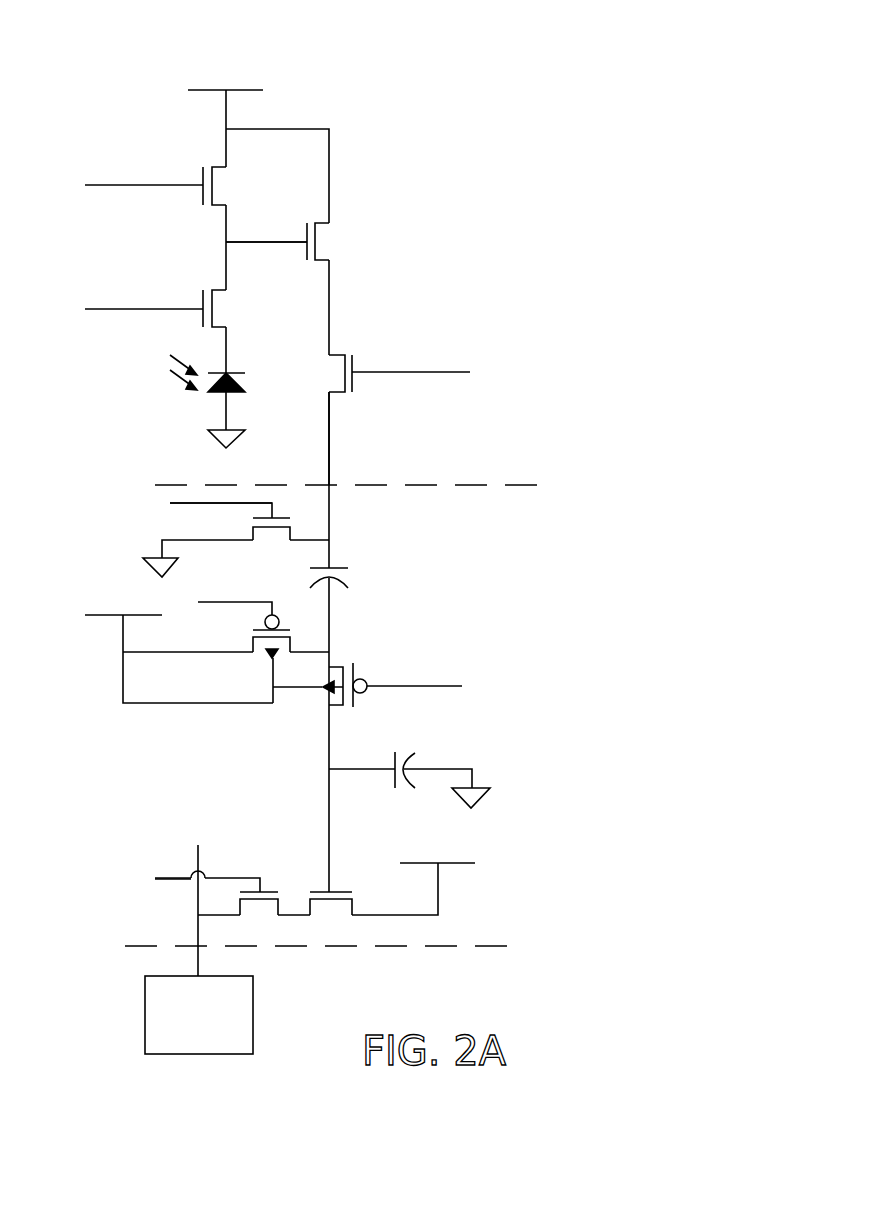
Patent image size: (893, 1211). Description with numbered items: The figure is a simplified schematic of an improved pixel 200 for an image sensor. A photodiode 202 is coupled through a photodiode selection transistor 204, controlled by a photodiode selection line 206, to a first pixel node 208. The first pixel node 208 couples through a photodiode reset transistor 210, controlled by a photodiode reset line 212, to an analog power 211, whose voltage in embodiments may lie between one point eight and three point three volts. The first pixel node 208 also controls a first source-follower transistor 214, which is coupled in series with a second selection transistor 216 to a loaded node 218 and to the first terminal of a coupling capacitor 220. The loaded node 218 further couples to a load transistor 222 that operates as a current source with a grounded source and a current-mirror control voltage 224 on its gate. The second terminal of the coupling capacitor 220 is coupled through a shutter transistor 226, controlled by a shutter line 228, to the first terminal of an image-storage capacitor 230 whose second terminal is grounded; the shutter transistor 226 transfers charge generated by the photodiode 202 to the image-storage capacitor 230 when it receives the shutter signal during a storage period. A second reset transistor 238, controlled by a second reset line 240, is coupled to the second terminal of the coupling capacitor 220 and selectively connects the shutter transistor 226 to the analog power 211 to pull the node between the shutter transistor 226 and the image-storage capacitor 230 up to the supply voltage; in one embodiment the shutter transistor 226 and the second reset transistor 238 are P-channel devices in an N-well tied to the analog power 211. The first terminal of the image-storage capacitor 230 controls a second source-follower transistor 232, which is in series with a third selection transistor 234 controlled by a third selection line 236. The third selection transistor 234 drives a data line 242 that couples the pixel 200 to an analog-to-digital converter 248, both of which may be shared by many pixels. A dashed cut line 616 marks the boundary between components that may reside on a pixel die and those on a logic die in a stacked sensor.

The pixel 200 is at (452, 65).
The photodiode 202 is at (208, 388).
The photodiode selection transistor 204 is at (205, 290).
The photodiode selection line 206 is at (153, 309).
The first pixel node 208 is at (228, 232).
The photodiode reset transistor 210 is at (215, 190).
The analog power 211 is at (236, 77).
The photodiode reset line 212 is at (158, 185).
The first source-follower transistor 214 is at (320, 243).
The second selection transistor 216 is at (350, 363).
The loaded node 218 is at (330, 465).
The coupling capacitor 220 is at (352, 577).
The load transistor 222 is at (293, 535).
The current-mirror control voltage 224 is at (200, 504).
The shutter transistor 226 is at (353, 670).
The shutter line 228 is at (433, 683).
The image-storage capacitor 230 is at (402, 757).
The second source-follower transistor 232 is at (320, 890).
The third selection transistor 234 is at (258, 890).
The third selection line 236 is at (180, 878).
The second reset transistor 238 is at (267, 653).
The second reset line 240 is at (270, 604).
The data line 242 is at (197, 855).
The analog-to-digital converter 248 is at (181, 1041).
The cut line 616 is at (208, 485).